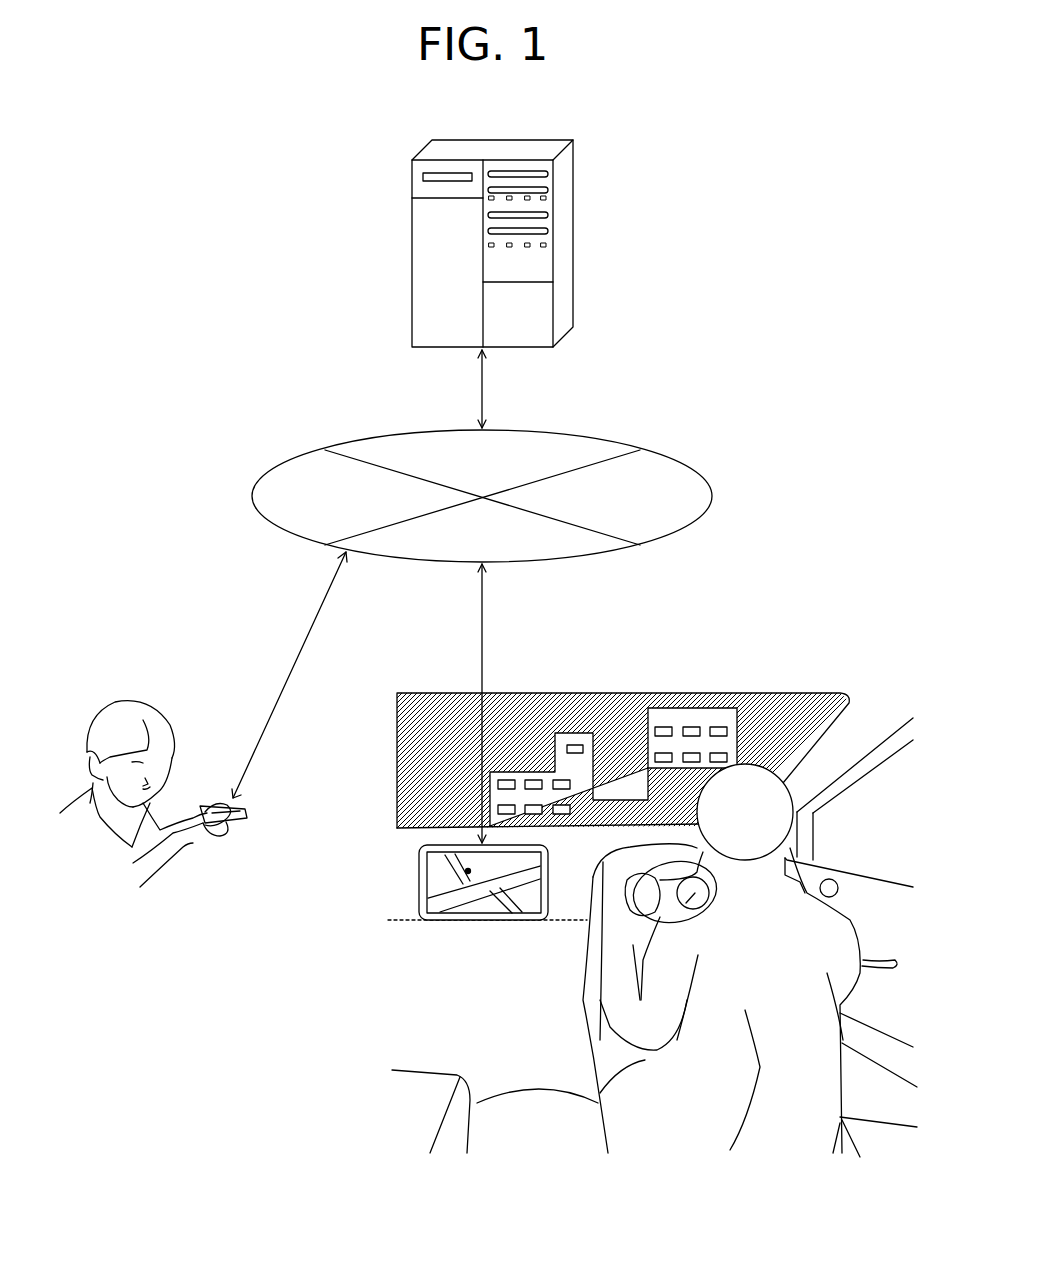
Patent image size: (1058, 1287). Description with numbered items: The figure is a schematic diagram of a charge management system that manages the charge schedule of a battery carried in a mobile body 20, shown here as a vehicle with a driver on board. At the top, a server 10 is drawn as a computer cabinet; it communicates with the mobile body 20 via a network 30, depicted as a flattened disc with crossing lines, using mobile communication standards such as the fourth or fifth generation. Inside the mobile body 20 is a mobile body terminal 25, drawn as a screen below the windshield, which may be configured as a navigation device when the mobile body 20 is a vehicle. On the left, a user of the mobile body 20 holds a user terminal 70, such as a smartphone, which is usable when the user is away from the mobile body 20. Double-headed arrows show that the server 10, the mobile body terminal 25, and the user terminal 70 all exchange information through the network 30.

The server 10 is at (412, 237).
The network 30 is at (698, 472).
The mobile body 20 is at (465, 1023).
The mobile body terminal 25 is at (432, 880).
The user terminal 70 is at (230, 820).